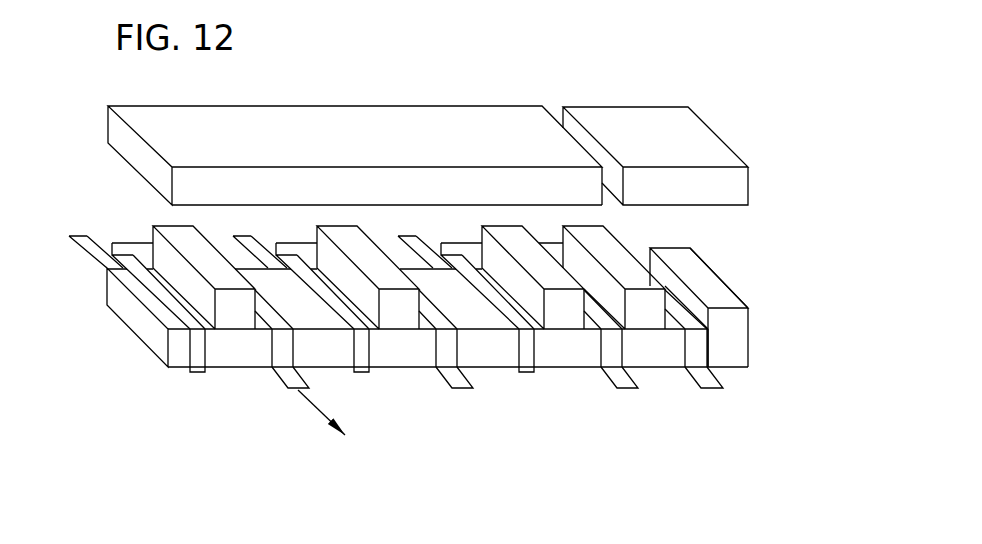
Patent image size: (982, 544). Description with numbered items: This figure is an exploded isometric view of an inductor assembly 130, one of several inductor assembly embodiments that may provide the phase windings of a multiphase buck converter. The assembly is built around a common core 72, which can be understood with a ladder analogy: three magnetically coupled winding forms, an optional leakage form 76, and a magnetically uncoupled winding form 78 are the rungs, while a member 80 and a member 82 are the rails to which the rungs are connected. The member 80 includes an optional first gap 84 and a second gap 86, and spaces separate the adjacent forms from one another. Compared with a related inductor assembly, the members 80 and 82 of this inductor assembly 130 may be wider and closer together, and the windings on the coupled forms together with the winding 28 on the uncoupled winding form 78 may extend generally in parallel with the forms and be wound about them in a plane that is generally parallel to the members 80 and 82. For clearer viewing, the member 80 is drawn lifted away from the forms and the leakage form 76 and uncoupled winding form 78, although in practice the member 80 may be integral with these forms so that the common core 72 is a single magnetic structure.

The inductor assembly 130 is at (430, 341).
The common core 72 is at (458, 335).
The member 82 is at (128, 325).
The leakage form 76 is at (647, 297).
The magnetically uncoupled winding form 78 is at (734, 303).
The member 80 is at (240, 120).
The first gap 84 is at (557, 106).
The second gap 86 is at (711, 258).
The winding 28 is at (713, 392).